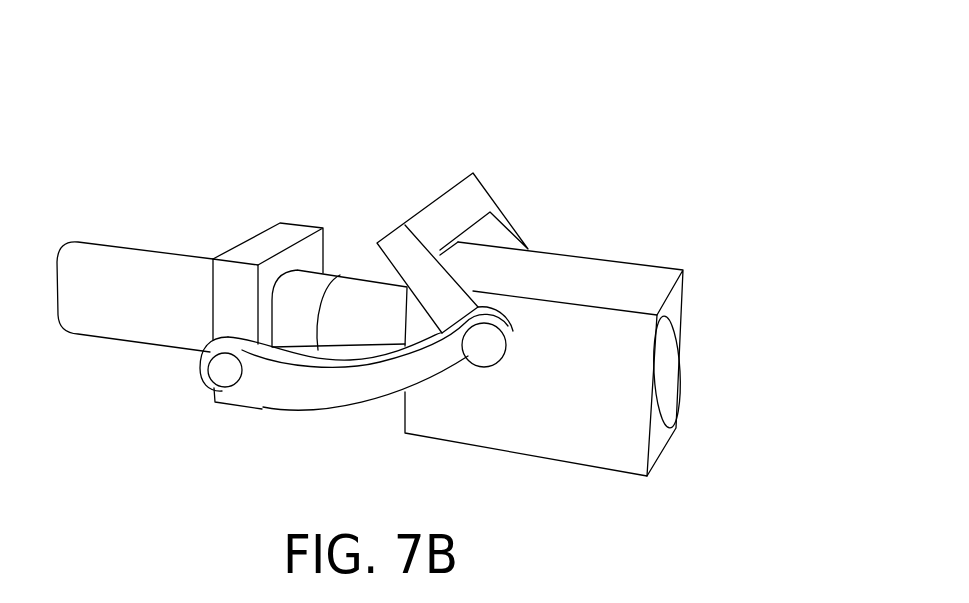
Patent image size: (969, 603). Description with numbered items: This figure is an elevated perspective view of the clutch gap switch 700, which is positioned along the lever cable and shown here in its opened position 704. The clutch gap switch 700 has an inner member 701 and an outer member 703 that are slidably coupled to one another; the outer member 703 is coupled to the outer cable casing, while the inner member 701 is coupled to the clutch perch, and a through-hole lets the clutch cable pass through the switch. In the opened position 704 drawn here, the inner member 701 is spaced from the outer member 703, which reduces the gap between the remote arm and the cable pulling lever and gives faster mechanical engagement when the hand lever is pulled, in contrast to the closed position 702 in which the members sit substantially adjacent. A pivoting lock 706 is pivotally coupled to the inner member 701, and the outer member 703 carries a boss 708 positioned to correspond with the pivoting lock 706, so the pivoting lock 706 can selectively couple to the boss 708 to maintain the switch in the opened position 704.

The clutch gap switch 700 is at (632, 182).
The inner member 701 is at (117, 258).
The closed position 702 is at (223, 371).
The outer member 703 is at (580, 452).
The opened position 704 is at (350, 243).
The pivoting lock 706 is at (477, 200).
The boss 708 is at (485, 357).